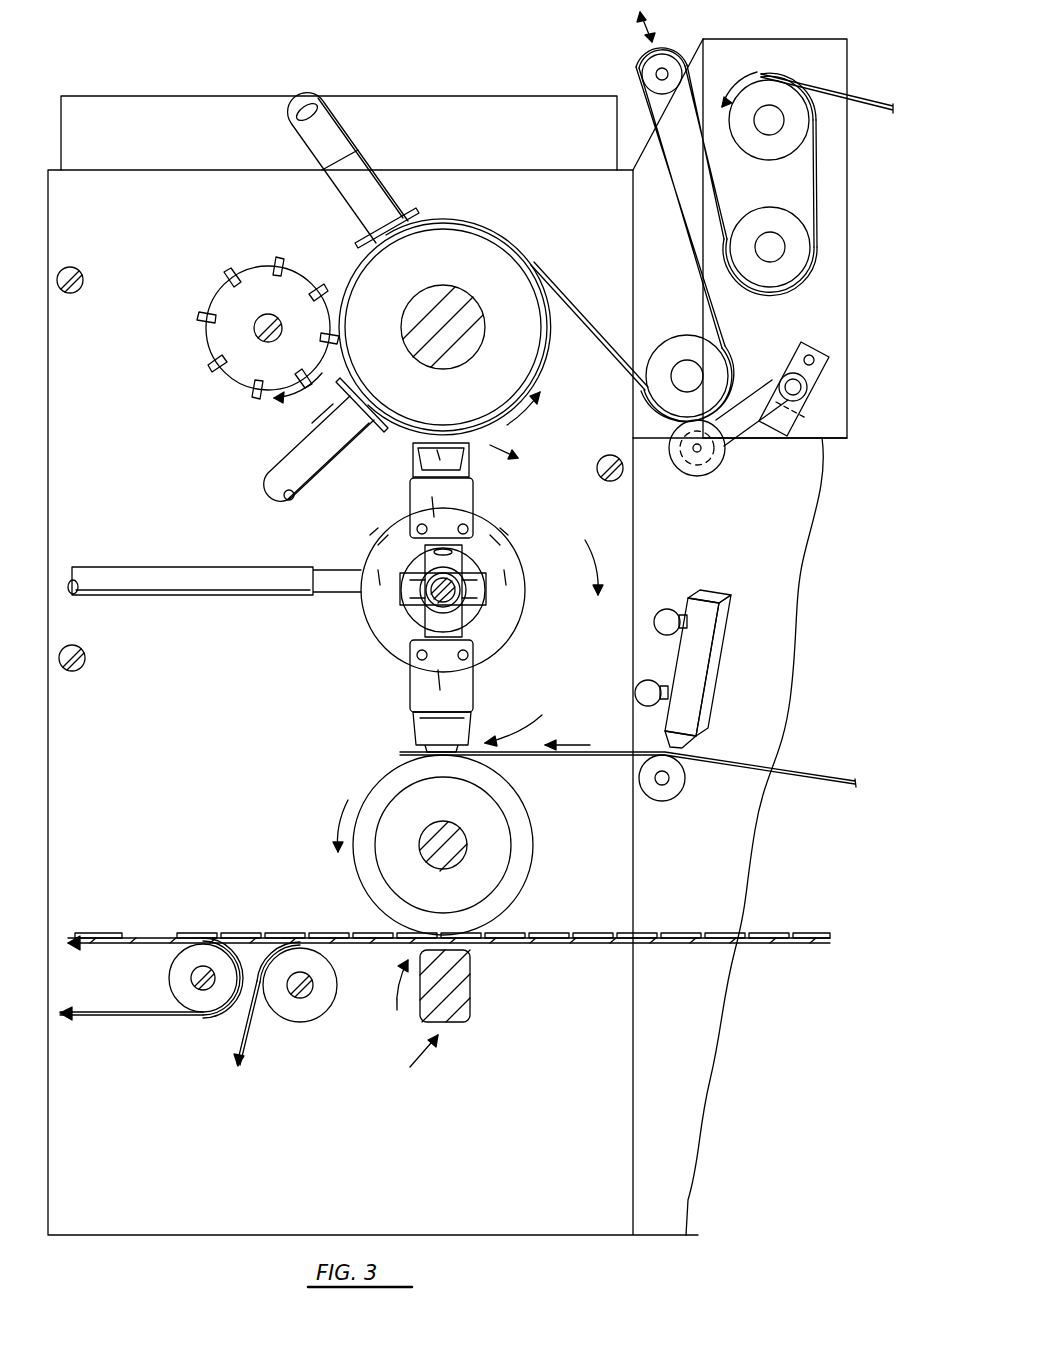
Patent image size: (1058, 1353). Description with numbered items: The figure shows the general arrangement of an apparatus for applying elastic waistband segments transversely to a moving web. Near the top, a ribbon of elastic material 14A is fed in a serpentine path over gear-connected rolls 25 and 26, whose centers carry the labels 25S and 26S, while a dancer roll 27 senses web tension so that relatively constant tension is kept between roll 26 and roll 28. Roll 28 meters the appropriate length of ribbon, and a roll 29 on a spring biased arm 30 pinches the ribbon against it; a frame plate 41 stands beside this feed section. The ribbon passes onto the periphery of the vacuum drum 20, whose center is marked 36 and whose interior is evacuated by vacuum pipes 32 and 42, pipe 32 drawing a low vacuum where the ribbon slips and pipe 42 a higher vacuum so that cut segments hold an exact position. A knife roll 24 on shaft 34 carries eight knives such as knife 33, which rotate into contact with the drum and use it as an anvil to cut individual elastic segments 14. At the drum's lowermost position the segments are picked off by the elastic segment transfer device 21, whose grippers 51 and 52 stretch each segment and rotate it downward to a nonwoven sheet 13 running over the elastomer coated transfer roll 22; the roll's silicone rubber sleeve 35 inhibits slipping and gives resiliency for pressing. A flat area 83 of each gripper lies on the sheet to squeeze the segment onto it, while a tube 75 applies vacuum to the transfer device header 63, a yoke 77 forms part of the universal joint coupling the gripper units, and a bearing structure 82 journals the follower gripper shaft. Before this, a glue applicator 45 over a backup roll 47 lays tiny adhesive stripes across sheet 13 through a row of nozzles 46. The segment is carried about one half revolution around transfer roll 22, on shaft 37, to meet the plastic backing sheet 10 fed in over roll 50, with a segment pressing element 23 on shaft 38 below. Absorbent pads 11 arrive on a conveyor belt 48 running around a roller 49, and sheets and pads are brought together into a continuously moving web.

The plastic backing sheet 10 is at (795, 948).
The absorbent pads 11 is at (185, 933).
The nonwoven sheet 13 is at (610, 745).
The elastic segment 14 is at (412, 452).
The elastic ribbon 14A is at (560, 292).
The vacuum drum 20 is at (550, 378).
The elastic segment transfer device 21 is at (453, 581).
The transfer roll 22 is at (469, 845).
The segment pressing element 23 is at (415, 1064).
The knife roll 24 is at (244, 323).
The roll 25 is at (780, 150).
The feed roller shaft 25S is at (785, 122).
The roll 26 is at (810, 265).
The feed roller shaft 26S is at (790, 250).
The dancer roll 27 is at (668, 60).
The roll 28 is at (685, 335).
The roll 29 is at (708, 470).
The spring biased arm 30 is at (762, 440).
The vacuum pipe 32 is at (355, 170).
The knife 33 is at (230, 285).
The shaft 34 is at (260, 315).
The silicone rubber cylindrical sleeve 35 is at (533, 845).
The drum shaft 36 is at (462, 300).
The shaft 37 is at (455, 835).
The shaft 38 is at (472, 970).
The frame plate 41 is at (815, 40).
The vacuum pipe 42 is at (300, 445).
The glue applicator 45 is at (708, 672).
The nozzles 46 is at (685, 745).
The backup roll 47 is at (680, 790).
The conveyor belt 48 is at (145, 1010).
The roller 49 is at (178, 972).
The roll 50 is at (303, 1022).
The gripper 51 is at (447, 490).
The gripper 52 is at (410, 696).
The header 63 is at (366, 628).
The tube 75 is at (305, 567).
The yoke 77 is at (470, 630).
The bearing structure 82 is at (455, 580).
The gripper area 83 is at (416, 470).